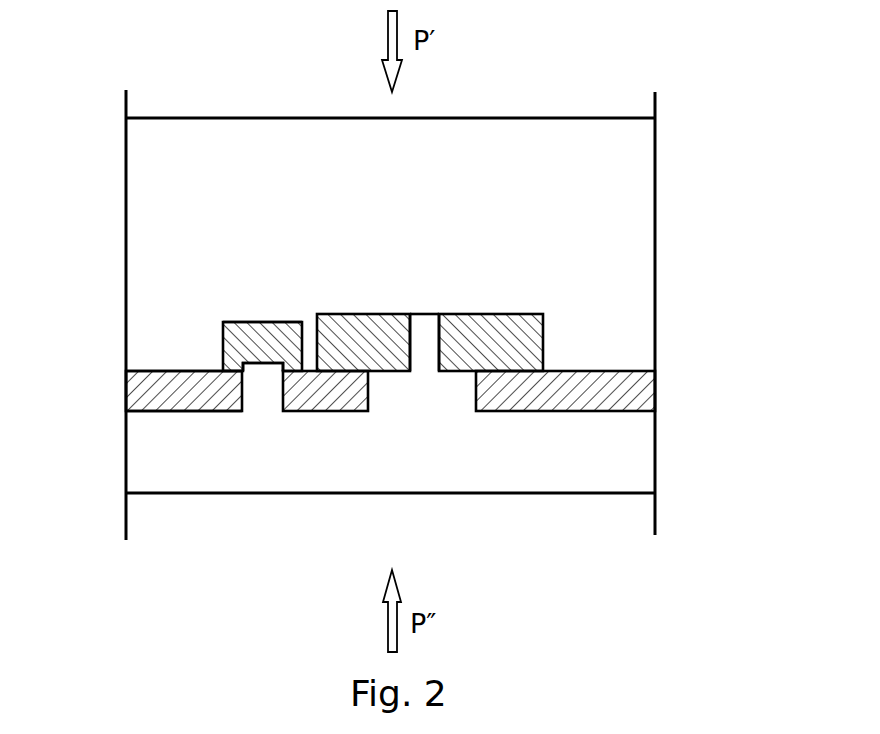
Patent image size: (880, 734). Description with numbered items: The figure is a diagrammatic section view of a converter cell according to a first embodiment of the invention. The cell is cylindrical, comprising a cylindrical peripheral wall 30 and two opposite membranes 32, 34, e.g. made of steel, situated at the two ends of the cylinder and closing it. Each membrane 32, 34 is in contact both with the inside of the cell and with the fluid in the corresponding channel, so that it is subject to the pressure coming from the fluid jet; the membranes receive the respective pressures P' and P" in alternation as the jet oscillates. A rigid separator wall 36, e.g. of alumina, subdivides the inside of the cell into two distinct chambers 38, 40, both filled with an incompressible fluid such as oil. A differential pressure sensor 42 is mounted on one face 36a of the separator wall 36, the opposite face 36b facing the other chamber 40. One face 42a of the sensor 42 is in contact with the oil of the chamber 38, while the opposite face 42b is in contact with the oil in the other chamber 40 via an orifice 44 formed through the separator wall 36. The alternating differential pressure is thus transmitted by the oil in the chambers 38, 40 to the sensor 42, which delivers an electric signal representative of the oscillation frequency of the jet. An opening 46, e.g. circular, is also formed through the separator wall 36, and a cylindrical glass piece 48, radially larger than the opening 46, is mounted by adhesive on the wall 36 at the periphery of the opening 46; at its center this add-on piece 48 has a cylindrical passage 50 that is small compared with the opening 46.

The cylindrical peripheral wall 30 is at (658, 338).
The membrane 32 is at (622, 118).
The membrane 34 is at (540, 493).
The rigid separator wall 36 is at (655, 382).
The face of separator wall 36a is at (168, 370).
The face of separator wall 36b is at (160, 412).
The chamber 38 is at (633, 195).
The chamber 40 is at (632, 450).
The differential pressure sensor 42 is at (263, 330).
The face of sensor 42a is at (249, 326).
The opposite face of sensor 42b is at (260, 372).
The orifice 44 is at (270, 397).
The opening 46 is at (388, 395).
The piece 48 is at (513, 323).
The passage 50 is at (425, 328).